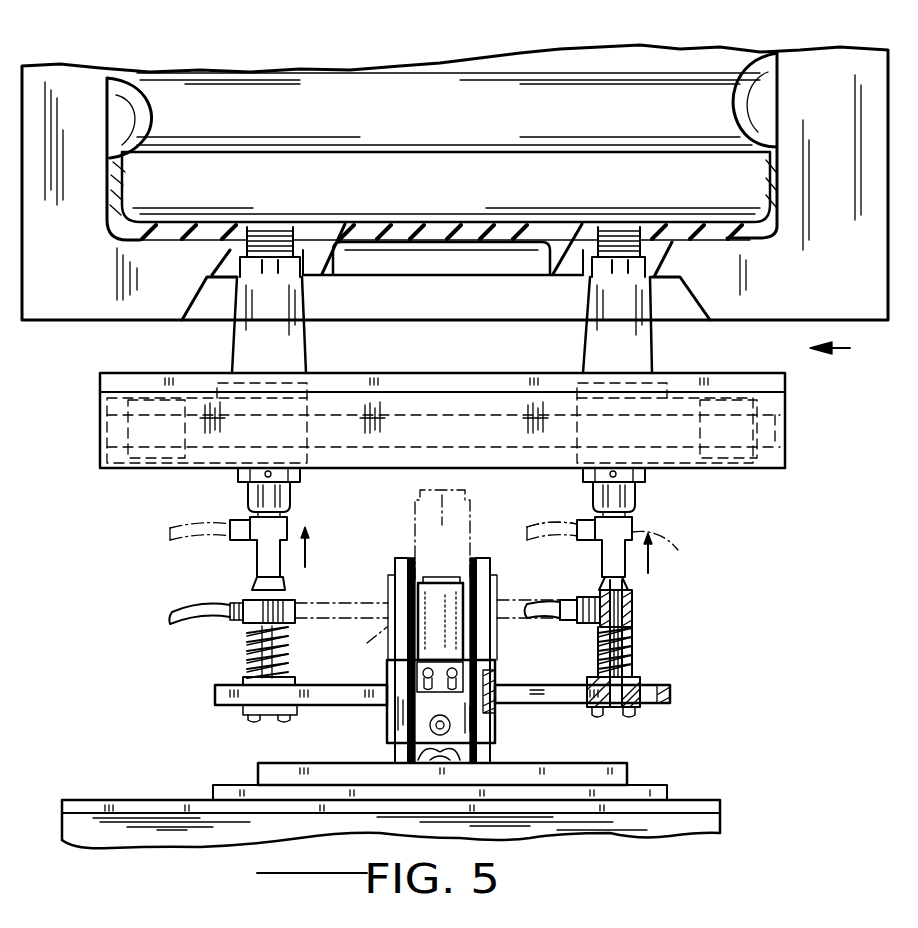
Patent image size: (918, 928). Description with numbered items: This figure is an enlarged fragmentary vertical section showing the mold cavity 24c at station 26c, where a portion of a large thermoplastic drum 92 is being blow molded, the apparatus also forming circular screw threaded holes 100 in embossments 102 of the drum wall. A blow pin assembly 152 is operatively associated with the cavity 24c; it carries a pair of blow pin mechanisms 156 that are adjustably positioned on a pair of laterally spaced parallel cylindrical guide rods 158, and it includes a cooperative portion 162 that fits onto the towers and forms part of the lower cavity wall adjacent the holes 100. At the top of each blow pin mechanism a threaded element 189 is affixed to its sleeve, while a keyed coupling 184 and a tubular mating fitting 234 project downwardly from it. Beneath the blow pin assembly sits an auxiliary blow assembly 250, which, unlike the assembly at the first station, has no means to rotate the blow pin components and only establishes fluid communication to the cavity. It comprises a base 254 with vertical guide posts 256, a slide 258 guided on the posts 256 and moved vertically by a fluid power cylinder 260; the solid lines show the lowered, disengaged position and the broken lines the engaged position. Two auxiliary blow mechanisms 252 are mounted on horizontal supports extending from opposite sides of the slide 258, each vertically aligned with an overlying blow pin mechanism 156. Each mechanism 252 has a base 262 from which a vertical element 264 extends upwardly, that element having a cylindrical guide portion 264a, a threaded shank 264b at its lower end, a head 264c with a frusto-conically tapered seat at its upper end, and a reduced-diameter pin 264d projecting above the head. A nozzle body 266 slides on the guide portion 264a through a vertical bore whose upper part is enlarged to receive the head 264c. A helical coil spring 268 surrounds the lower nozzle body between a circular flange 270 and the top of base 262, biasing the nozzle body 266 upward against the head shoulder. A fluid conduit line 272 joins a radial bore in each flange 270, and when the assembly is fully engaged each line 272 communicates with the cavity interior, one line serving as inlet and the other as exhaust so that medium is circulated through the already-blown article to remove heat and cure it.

The mold cavity 24c is at (455, 182).
The drum 92 is at (432, 88).
The screw threaded holes 100 is at (284, 232).
The embossments 102 is at (567, 255).
The blow pin assembly 152 is at (786, 373).
The blow pin mechanisms 156 is at (232, 353).
The guide rods 158 is at (413, 413).
The cooperative portion 162 is at (487, 326).
The keyed coupling 184 is at (240, 473).
The threaded element 189 is at (265, 228).
The mating fitting 234 is at (248, 494).
The auxiliary blow assembly 250 is at (213, 696).
The auxiliary blow mechanisms 252 is at (290, 600).
The base 254 is at (627, 763).
The vertical guide posts 256 is at (405, 558).
The slide 258 is at (387, 675).
The fluid power cylinder 260 is at (437, 577).
The base 262 is at (248, 680).
The vertical element 264 is at (630, 650).
The cylindrical guide portion 264a is at (640, 670).
The threaded shank 264b is at (619, 707).
The head 264c is at (627, 633).
The pin 264d is at (598, 590).
The nozzle body 266 is at (656, 603).
The helical coil spring 268 is at (597, 657).
The circular flange 270 is at (633, 606).
The fluid conduit line 272 is at (196, 606).
The station 26c is at (857, 353).